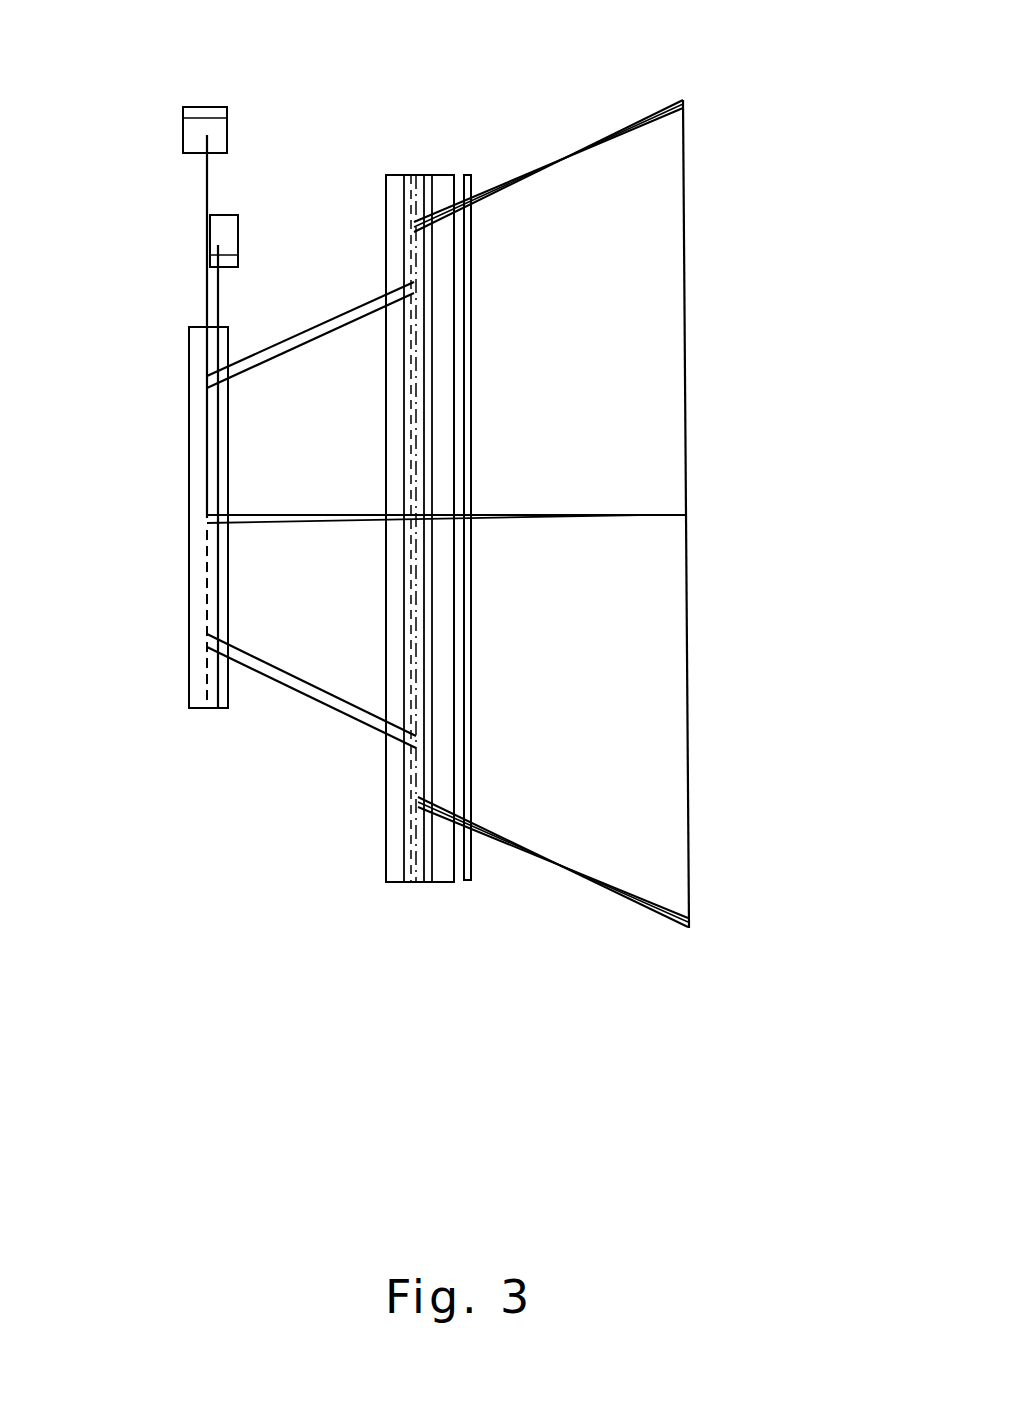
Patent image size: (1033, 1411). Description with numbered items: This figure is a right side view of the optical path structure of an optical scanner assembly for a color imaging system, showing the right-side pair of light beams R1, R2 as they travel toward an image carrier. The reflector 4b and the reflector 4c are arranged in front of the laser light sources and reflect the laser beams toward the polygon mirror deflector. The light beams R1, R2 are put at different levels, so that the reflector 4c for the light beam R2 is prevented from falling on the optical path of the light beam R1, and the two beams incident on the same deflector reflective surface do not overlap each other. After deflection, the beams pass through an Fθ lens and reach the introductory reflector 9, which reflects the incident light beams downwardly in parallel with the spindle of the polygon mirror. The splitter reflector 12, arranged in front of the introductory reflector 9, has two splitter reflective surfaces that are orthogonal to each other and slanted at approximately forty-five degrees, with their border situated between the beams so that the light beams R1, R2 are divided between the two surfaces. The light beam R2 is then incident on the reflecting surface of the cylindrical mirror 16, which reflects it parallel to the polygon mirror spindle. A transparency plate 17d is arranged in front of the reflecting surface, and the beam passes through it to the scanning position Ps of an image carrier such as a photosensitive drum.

The reflector 4b is at (207, 115).
The reflector 4c is at (230, 217).
The light beam R1 is at (203, 208).
The light beam R2 is at (219, 295).
The introductory reflector 9 is at (202, 590).
The cylindrical mirror 16 is at (397, 778).
The splitter reflector 12 is at (445, 873).
The transparency plate 17d is at (472, 882).
The scanning position Ps is at (687, 643).